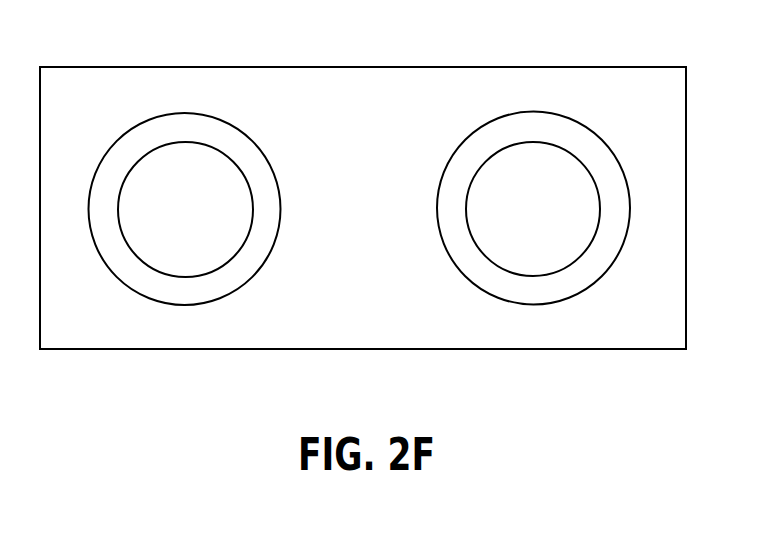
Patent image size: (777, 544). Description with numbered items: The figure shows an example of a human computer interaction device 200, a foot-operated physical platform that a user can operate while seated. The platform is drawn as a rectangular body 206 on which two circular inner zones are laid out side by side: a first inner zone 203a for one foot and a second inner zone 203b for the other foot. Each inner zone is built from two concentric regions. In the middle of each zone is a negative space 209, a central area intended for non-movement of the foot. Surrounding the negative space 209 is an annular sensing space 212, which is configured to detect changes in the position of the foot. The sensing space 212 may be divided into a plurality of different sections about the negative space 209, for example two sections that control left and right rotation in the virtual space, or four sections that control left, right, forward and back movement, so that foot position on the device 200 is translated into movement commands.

The human computer interaction device 200 is at (363, 174).
The substrate 206 is at (382, 315).
The sensing space 212 is at (487, 162).
The negative space 209 is at (380, 183).
The first inner zone 203a is at (232, 215).
The second inner zone 203b is at (577, 216).